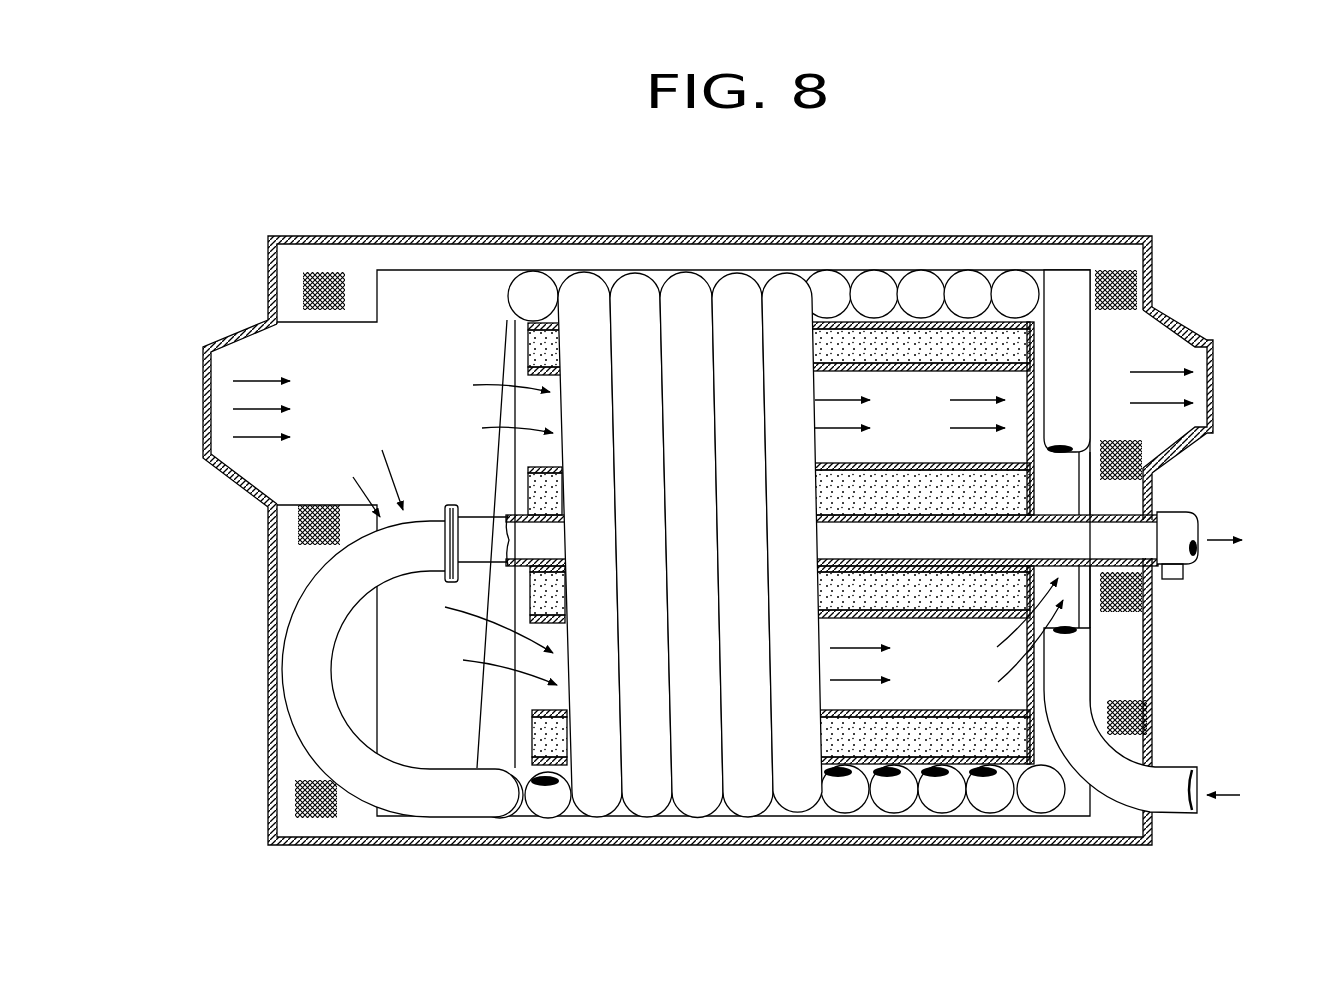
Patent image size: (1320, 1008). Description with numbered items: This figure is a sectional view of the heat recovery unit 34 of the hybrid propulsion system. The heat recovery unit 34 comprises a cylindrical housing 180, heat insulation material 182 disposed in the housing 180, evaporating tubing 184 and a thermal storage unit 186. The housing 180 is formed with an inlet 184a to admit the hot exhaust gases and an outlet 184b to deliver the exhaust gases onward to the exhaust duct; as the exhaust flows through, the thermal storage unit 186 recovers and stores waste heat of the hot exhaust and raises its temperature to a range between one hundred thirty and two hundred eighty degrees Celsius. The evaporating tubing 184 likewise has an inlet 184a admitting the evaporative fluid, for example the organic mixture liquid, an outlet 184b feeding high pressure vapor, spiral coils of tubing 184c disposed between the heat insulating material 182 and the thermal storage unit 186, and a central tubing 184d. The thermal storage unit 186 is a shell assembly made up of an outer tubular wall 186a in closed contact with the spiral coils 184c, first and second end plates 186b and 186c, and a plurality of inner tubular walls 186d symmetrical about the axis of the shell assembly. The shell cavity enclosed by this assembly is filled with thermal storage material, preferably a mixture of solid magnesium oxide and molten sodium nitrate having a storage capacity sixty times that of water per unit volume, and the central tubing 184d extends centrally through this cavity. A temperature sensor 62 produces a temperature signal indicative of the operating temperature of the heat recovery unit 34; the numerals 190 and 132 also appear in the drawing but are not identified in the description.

The heat recovery unit 34 is at (1125, 228).
The heat insulation material 182 is at (1132, 258).
The cylindrical housing 180 is at (806, 240).
The evaporating tubing 184 is at (731, 296).
The inlet 184a is at (262, 325).
The outlet 184b is at (1157, 310).
The spiral coils of tubing 184c is at (893, 808).
The central tubing 184d is at (478, 573).
The thermal storage unit 186 is at (1035, 498).
The outer tubular wall 186a is at (908, 293).
The first end plate 186b is at (530, 347).
The second end plate 186c is at (1048, 280).
The inner tubular walls 186d is at (915, 371).
The insulation 190 is at (838, 335).
The temperature sensor 62 is at (1172, 580).
The inlet 132 is at (210, 460).